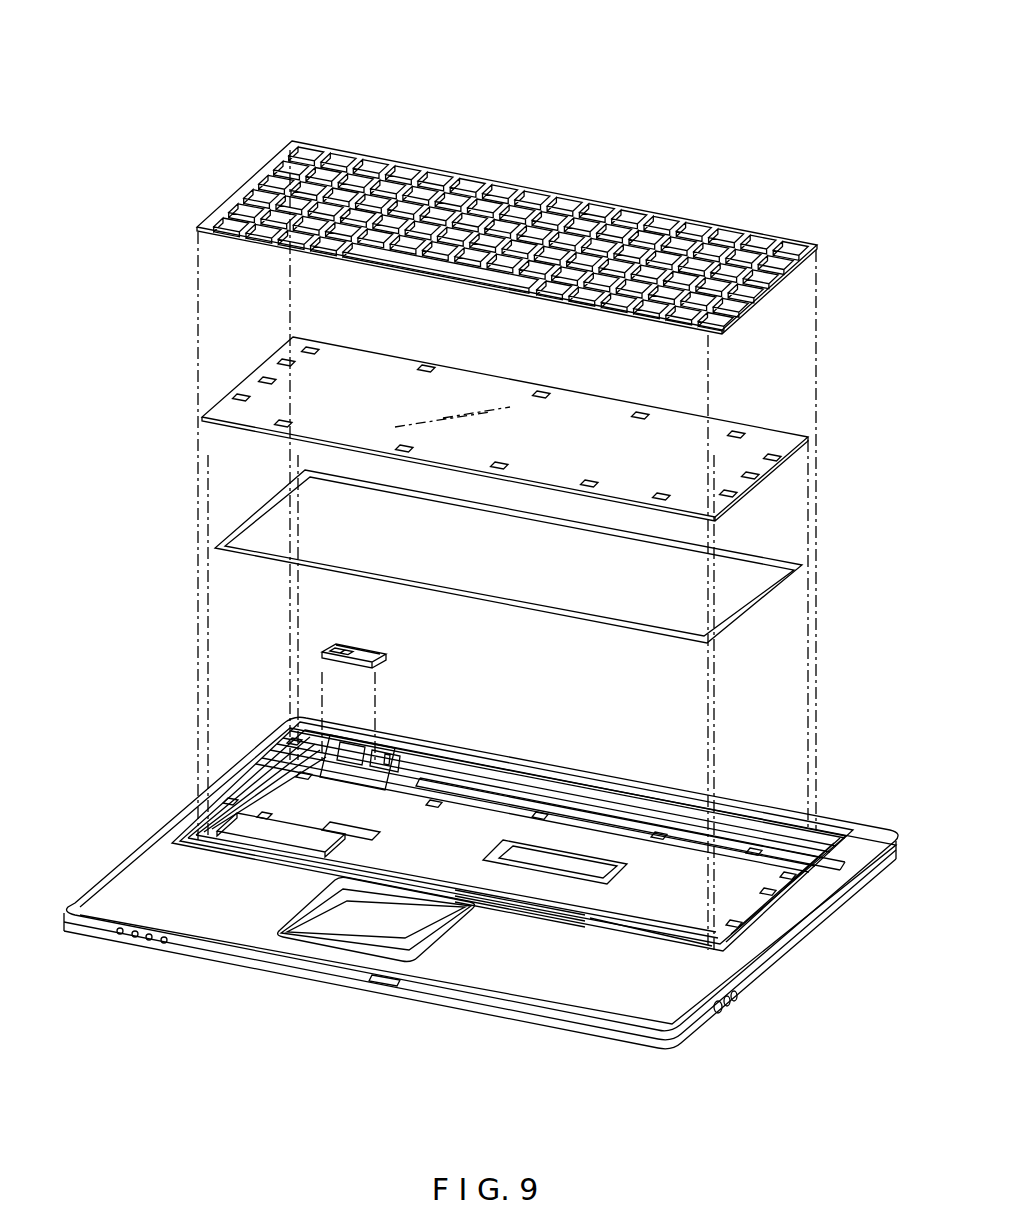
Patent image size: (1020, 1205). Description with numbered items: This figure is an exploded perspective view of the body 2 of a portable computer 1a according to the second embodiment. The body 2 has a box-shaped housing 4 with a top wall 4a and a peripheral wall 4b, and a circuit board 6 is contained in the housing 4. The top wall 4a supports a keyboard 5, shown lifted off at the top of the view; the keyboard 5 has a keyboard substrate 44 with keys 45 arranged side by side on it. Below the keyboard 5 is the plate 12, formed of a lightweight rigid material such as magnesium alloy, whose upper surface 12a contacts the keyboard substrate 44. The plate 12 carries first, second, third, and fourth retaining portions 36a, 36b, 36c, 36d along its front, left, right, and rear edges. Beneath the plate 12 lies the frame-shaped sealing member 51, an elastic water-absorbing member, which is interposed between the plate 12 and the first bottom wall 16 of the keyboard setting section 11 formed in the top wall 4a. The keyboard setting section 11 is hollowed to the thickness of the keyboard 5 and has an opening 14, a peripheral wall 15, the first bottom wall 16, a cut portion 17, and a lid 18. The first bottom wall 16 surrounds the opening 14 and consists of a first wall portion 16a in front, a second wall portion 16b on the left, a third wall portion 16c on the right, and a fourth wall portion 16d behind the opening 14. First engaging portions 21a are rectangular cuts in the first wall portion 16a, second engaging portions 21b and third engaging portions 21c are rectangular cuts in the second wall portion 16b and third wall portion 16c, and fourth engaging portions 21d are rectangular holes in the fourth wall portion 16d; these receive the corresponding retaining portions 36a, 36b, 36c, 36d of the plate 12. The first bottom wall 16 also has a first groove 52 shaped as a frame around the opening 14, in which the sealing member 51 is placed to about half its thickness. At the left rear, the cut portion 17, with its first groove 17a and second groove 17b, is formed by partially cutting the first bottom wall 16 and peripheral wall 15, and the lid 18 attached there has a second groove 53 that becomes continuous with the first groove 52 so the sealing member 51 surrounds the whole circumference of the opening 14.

The portable computer 1a is at (212, 78).
The body 2 is at (177, 138).
The housing 4 is at (553, 1038).
The top wall 4a is at (632, 997).
The peripheral wall 4b is at (467, 1002).
The keyboard 5 is at (344, 162).
The circuit board 6 is at (512, 812).
The keyboard setting section 11 is at (582, 806).
The plate 12 is at (606, 392).
The upper surface 12a is at (478, 395).
The opening 14 is at (630, 915).
The peripheral wall 15 is at (262, 795).
The first bottom wall 16 is at (462, 800).
The first wall portion 16a is at (316, 860).
The second wall portion 16b is at (272, 762).
The third wall portion 16c is at (762, 906).
The fourth wall portion 16d is at (626, 830).
The cut portion 17 is at (380, 720).
The first groove 17a is at (388, 750).
The second groove 17b is at (358, 738).
The lid 18 is at (372, 660).
The first engaging portions 21a is at (302, 865).
The second engaging portions 21b is at (295, 740).
The third engaging portions 21c is at (790, 880).
The fourth engaging portions 21d is at (542, 820).
The first retaining portions 36a is at (405, 448).
The second retaining portions 36b is at (287, 362).
The third retaining portions 36c is at (730, 493).
The fourth retaining portions 36d is at (315, 347).
The keyboard substrate 44 is at (722, 316).
The keys 45 is at (585, 218).
The sealing member 51 is at (790, 592).
The first groove 52 is at (497, 805).
The second groove 53 is at (355, 652).